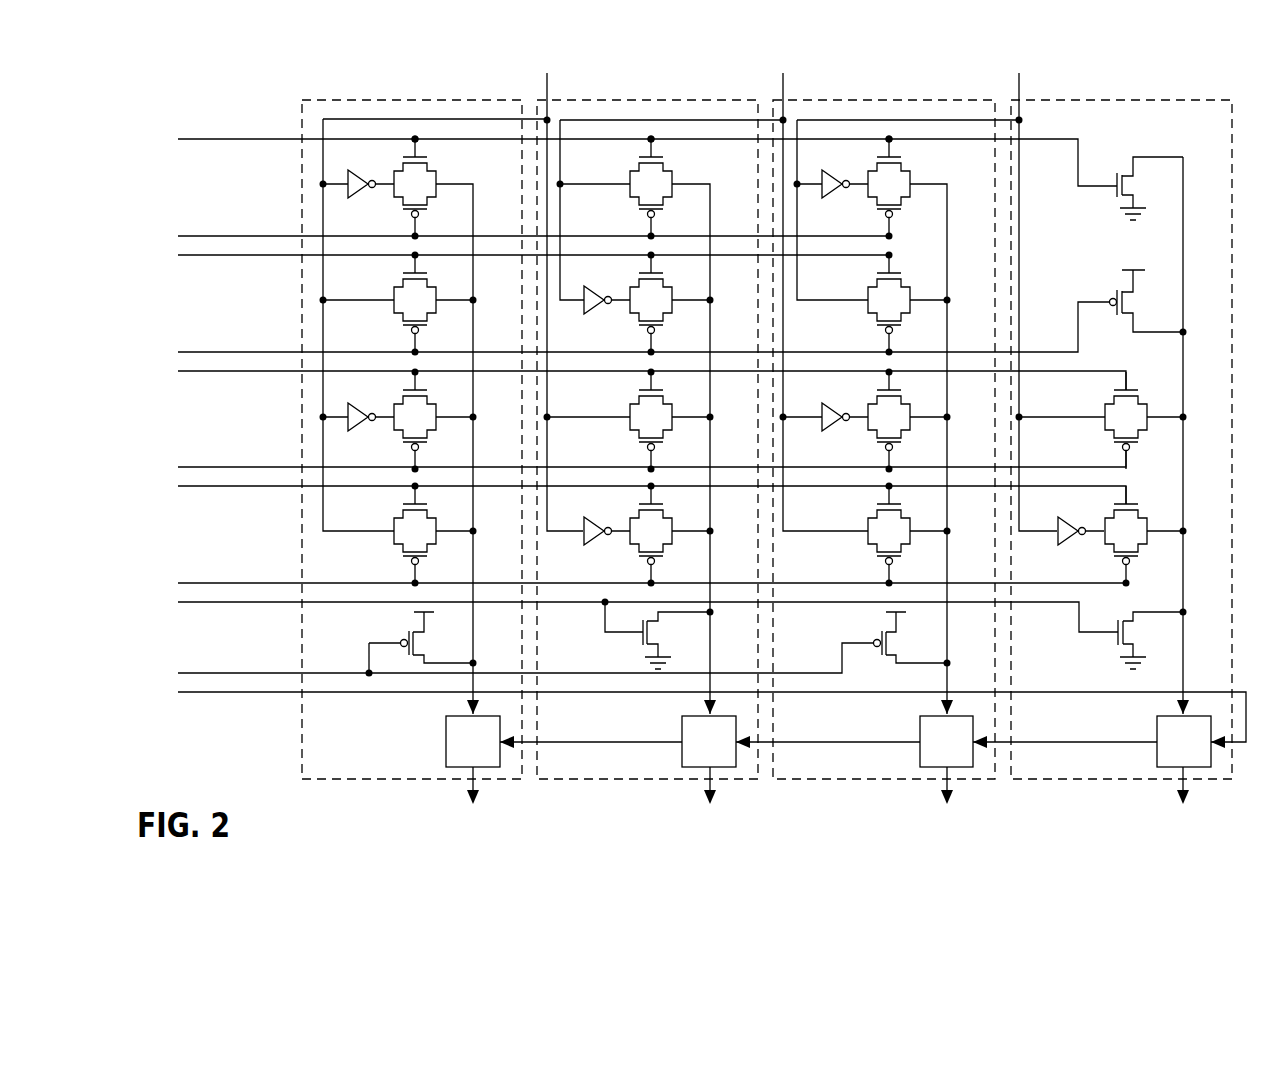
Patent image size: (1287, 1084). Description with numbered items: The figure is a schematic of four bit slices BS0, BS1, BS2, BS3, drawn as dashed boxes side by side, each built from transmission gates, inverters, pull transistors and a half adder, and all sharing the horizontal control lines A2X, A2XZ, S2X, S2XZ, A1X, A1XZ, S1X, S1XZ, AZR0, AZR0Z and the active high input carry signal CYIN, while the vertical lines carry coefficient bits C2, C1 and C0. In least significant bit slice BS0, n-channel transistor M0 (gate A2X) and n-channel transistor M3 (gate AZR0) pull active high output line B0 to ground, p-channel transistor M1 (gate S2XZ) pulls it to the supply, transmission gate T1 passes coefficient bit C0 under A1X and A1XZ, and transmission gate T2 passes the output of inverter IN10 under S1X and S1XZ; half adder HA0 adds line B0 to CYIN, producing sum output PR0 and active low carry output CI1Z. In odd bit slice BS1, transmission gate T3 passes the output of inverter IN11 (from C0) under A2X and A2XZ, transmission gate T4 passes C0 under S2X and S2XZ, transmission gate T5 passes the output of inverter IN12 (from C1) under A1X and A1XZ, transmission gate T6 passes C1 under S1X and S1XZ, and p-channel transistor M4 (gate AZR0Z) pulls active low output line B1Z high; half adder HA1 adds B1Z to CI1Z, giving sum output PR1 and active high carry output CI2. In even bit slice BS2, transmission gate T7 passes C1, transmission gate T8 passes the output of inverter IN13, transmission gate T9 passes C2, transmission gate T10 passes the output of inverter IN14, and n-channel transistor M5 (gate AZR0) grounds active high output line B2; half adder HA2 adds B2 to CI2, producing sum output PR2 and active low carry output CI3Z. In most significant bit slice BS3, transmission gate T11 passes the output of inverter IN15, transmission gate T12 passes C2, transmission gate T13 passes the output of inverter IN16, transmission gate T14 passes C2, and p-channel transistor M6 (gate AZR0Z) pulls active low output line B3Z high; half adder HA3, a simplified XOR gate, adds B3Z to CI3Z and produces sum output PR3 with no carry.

The most significant bit slice BS3 is at (368, 100).
The even bit slice BS2 is at (602, 100).
The odd bit slice BS1 is at (839, 100).
The least significant bit slice BS0 is at (1075, 100).
The coefficient bit C2 is at (559, 288).
The coefficient bit C1 is at (819, 288).
The coefficient bit C0 is at (1032, 288).
The control signal A2X is at (243, 138).
The control signal A2XZ is at (243, 235).
The control signal S2X is at (242, 256).
The control signal S2XZ is at (243, 351).
The control signal A1X is at (243, 372).
The control signal A1XZ is at (243, 466).
The control signal S1X is at (243, 487).
The control signal S1XZ is at (243, 582).
The output signal AZR0 is at (243, 603).
The output signal AZR0Z is at (243, 672).
The active high input carry signal CYIN is at (243, 693).
The transmission gate T1 is at (1112, 420).
The transmission gate T2 is at (1112, 534).
The transmission gate T3 is at (875, 188).
The transmission gate T4 is at (875, 304).
The transmission gate T5 is at (875, 421).
The transmission gate T6 is at (875, 535).
The transmission gate T7 is at (637, 188).
The transmission gate T8 is at (637, 304).
The transmission gate T9 is at (637, 421).
The transmission gate T10 is at (635, 535).
The transmission gate T11 is at (399, 188).
The transmission gate T12 is at (399, 304).
The transmission gate T13 is at (399, 421).
The transmission gate T14 is at (399, 535).
The inverter IN10 is at (1081, 519).
The inverter IN11 is at (845, 172).
The inverter IN12 is at (845, 405).
The inverter IN13 is at (607, 288).
The inverter IN14 is at (607, 519).
The inverter IN15 is at (371, 172).
The inverter IN16 is at (371, 405).
The n-channel transistor M0 is at (1110, 192).
The p-channel transistor M1 is at (1130, 283).
The n-channel transistor M3 is at (1117, 638).
The p-channel transistor M4 is at (894, 624).
The n-channel transistor M5 is at (642, 638).
The p-channel transistor M6 is at (422, 623).
The active low output line B3Z is at (472, 651).
The active high output line B2 is at (709, 652).
The active low output line B1Z is at (946, 652).
The active high output line B0 is at (1182, 652).
The half adder HA3 is at (454, 740).
The half adder HA2 is at (690, 734).
The half adder HA1 is at (928, 734).
The half adder HA0 is at (1165, 734).
The active low carry output CI3Z is at (626, 744).
The active high carry output CI2 is at (875, 744).
The active low carry output CI1Z is at (1098, 744).
The active high sum output PR3 is at (476, 774).
The active high sum output PR2 is at (713, 774).
The active high sum output PR1 is at (950, 774).
The active high sum output PR0 is at (1186, 774).